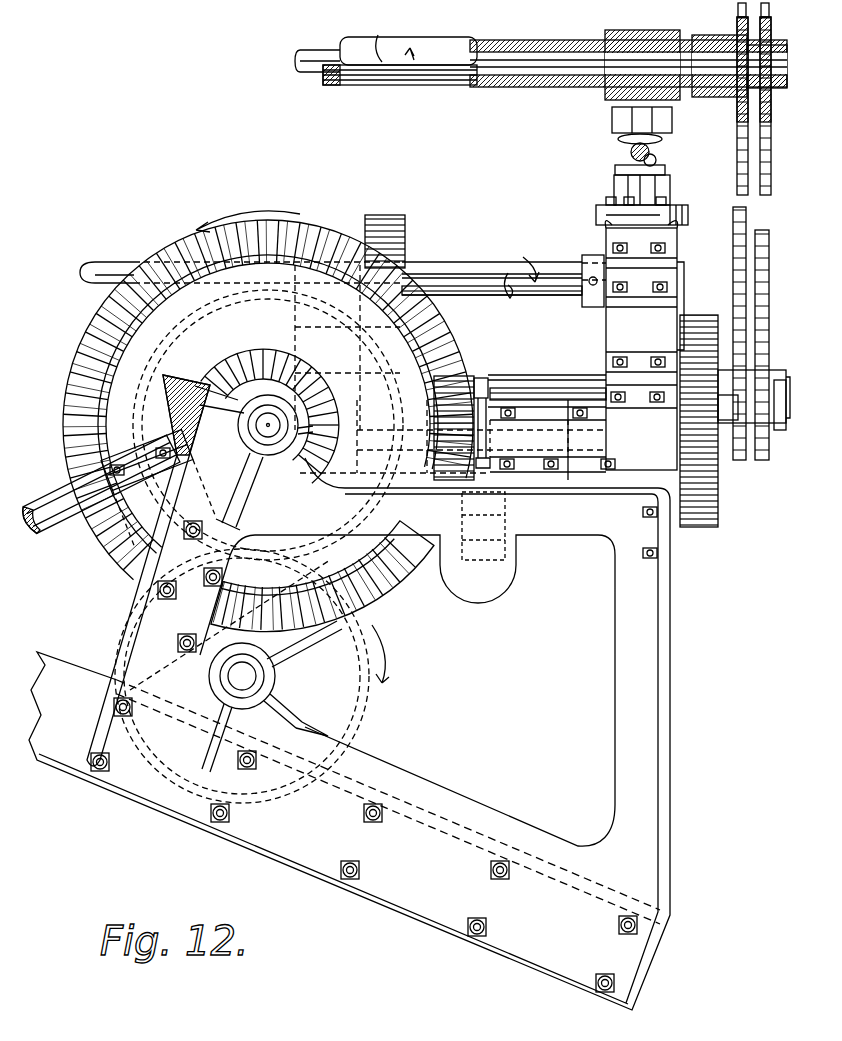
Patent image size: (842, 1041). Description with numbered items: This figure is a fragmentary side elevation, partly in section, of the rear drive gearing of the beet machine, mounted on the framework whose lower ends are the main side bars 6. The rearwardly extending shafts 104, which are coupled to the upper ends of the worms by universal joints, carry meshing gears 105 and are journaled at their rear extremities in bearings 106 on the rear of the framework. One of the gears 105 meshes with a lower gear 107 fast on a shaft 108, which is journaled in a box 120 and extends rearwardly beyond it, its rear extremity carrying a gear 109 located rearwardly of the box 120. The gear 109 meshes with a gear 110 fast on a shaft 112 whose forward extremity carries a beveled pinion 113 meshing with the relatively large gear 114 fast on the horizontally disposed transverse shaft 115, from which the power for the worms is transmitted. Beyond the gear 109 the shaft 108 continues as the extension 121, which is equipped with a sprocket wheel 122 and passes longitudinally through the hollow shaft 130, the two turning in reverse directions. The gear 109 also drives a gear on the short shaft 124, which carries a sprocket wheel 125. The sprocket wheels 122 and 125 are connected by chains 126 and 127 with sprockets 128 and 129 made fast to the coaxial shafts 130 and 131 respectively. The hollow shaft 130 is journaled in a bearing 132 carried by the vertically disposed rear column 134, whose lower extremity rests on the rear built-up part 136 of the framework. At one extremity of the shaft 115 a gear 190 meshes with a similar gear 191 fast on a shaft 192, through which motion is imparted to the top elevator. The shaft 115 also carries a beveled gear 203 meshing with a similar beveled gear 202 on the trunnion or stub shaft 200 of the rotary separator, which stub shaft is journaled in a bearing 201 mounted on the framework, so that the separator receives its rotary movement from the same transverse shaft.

The main side bars 6 is at (52, 748).
The rearwardly extending shafts 104 is at (105, 262).
The meshing gears 105 is at (405, 238).
The bearings 106 is at (612, 262).
The lower gear 107 is at (458, 352).
The shaft 108 is at (512, 378).
The gear 109 is at (700, 316).
The gear 110 is at (240, 360).
The shaft 112 is at (722, 440).
The beveled pinion 113 is at (484, 376).
The relatively large gear 114 is at (88, 352).
The horizontally disposed transverse shaft 115 is at (270, 450).
The box 120 is at (640, 375).
The shaft extension 121 is at (728, 370).
The sprocket wheel 122 is at (760, 465).
The short shaft 124 is at (780, 435).
The sprocket wheel 125 is at (762, 440).
The chain 126 is at (738, 150).
The chain 127 is at (760, 178).
The sprocket 128 is at (737, 20).
The sprocket 129 is at (760, 103).
The hollow shaft 130 is at (553, 88).
The shaft 131 is at (505, 88).
The bearing 132 is at (645, 30).
The rear column 134 is at (615, 148).
The rear built-up part of the framework 136 is at (600, 220).
The gear 190 is at (375, 585).
The gear 191 is at (360, 708).
The shaft 192 is at (247, 694).
The trunnion or stub shaft 200 is at (62, 530).
The bearing 201 is at (130, 455).
The beveled gear 202 is at (176, 378).
The beveled gear 203 is at (268, 348).